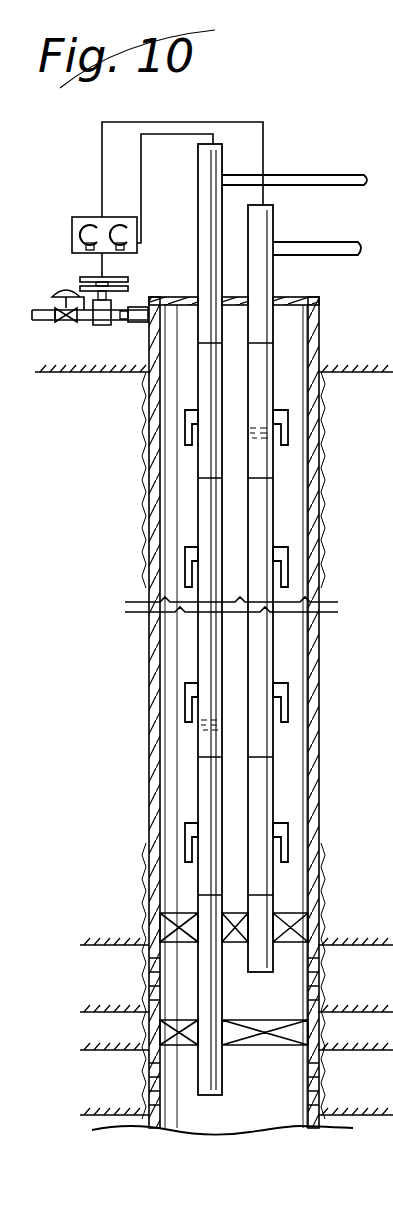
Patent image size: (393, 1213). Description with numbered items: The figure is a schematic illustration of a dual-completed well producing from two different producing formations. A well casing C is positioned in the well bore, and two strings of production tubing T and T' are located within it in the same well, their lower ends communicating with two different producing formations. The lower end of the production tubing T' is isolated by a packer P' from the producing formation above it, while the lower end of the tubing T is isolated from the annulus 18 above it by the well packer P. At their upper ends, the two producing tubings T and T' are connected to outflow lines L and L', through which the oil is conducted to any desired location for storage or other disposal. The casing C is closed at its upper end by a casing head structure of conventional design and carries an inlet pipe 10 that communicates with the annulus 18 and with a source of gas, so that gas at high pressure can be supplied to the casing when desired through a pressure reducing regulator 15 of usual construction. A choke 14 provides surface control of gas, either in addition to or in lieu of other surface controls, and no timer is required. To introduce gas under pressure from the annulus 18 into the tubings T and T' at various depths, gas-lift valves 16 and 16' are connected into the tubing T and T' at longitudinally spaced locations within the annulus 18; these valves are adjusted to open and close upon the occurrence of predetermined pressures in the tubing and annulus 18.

The inlet pipe 10 is at (135, 326).
The choke 14 is at (131, 308).
The pressure reducing regulator 15 is at (62, 293).
The gas-lift valves 16 is at (321, 636).
The gas-lift valves 16' is at (143, 636).
The annulus 18 is at (288, 741).
The well casing C is at (322, 508).
The outflow line L is at (317, 236).
The outflow line L' is at (294, 160).
The well packer P is at (260, 910).
The packer P' is at (234, 1059).
The production tubing T is at (304, 588).
The production tubing T' is at (157, 619).